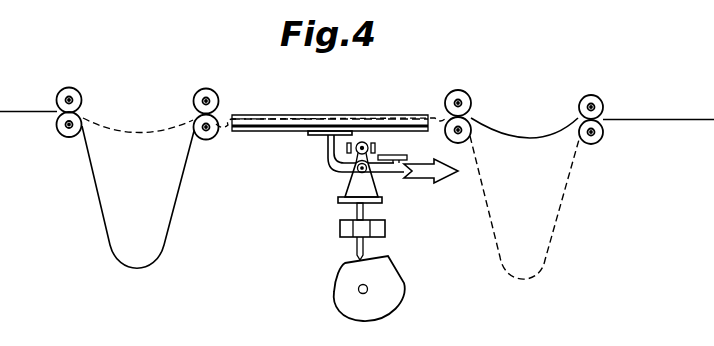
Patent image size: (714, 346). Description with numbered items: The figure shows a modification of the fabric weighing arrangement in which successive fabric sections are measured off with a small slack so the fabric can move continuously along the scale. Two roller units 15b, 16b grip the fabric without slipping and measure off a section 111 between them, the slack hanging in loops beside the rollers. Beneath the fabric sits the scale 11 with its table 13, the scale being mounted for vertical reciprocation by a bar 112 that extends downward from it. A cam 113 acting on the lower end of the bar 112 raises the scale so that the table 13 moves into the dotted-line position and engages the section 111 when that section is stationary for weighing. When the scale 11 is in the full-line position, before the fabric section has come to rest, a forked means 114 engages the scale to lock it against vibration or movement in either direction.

The roller unit 15b is at (186, 98).
The roller unit 16b is at (484, 101).
The table 13 is at (306, 115).
The section 111 is at (226, 117).
The scale 11 is at (312, 182).
The bar 112 is at (358, 213).
The cam 113 is at (348, 266).
The forked means 114 is at (413, 184).